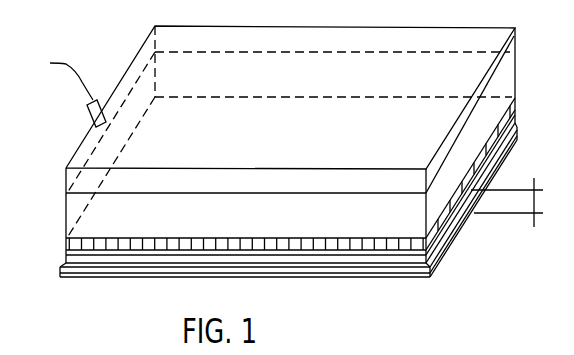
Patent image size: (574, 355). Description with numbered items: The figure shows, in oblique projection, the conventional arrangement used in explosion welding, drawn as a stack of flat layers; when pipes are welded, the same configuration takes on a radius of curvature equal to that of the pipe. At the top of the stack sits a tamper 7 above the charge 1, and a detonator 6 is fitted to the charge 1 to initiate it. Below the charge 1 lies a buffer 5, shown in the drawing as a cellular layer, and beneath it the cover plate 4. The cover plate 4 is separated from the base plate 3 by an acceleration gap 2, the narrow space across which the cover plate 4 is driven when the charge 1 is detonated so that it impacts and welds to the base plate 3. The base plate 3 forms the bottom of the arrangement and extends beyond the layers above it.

The charge 1 is at (497, 108).
The acceleration gap 2 is at (536, 198).
The base plate 3 is at (453, 239).
The cover plate 4 is at (357, 264).
The buffer 5 is at (66, 244).
The detonator 6 is at (90, 114).
The tamper 7 is at (501, 65).